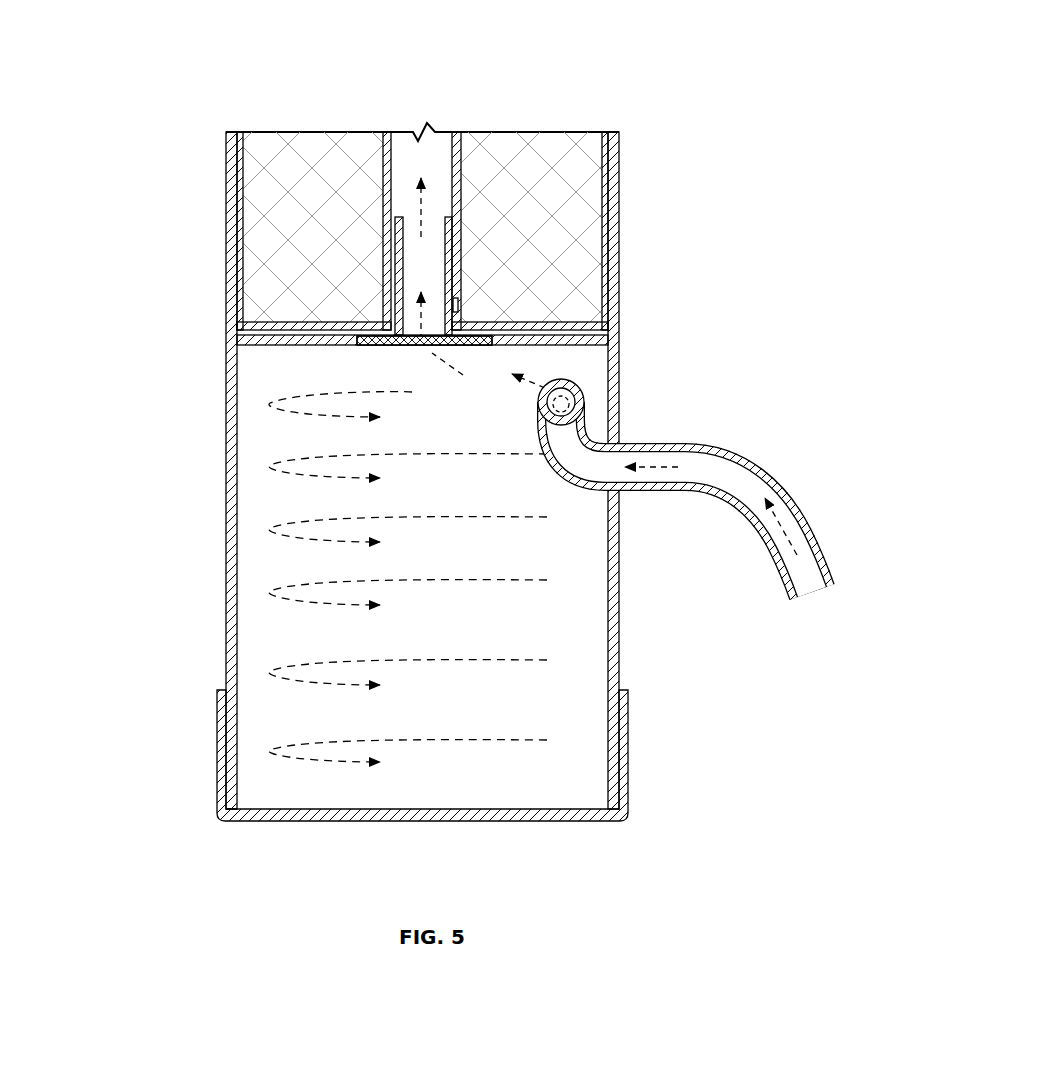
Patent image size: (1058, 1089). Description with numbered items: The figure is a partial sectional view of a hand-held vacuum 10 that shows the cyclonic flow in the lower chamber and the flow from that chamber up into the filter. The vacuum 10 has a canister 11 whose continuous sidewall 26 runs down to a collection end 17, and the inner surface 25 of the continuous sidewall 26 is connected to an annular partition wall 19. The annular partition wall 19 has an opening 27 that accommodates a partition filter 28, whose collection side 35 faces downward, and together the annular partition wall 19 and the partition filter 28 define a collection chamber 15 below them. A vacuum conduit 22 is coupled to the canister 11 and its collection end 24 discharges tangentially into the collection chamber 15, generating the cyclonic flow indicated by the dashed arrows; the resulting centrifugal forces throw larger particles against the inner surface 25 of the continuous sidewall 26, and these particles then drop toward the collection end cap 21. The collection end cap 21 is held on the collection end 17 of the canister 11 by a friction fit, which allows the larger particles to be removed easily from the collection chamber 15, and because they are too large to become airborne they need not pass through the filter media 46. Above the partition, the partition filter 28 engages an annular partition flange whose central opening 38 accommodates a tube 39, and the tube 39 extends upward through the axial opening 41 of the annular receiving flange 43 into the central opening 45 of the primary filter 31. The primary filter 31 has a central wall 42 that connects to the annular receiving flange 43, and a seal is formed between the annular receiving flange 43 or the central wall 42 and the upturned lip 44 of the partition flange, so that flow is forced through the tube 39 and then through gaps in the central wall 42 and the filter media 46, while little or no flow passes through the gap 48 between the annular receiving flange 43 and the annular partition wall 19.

The hand-held vacuum 10 is at (669, 76).
The canister 11 is at (215, 490).
The collection chamber 15 is at (545, 610).
The collection end 17 is at (235, 792).
The annular partition wall 19 is at (600, 341).
The collection end cap 21 is at (306, 821).
The vacuum conduit 22 is at (733, 443).
The collection end 24 is at (583, 402).
The inner surface 25 is at (240, 500).
The continuous sidewall 26 is at (232, 598).
The opening 27 is at (378, 347).
The partition filter 28 is at (413, 347).
The primary filter 31 is at (231, 225).
The collection side 35 is at (450, 347).
The central opening 38 is at (403, 347).
The tube 39 is at (390, 205).
The axial opening 41 is at (443, 347).
The central wall 42 is at (455, 172).
The annular receiving flange 43 is at (540, 322).
The upturned lip 44 is at (455, 300).
The central opening 45 is at (409, 172).
The filter media 46 is at (503, 227).
The gap 48 is at (238, 327).